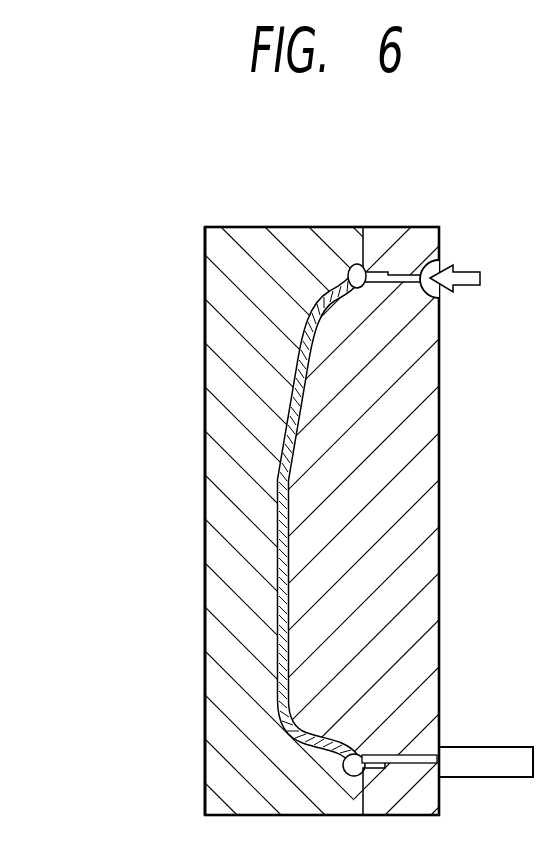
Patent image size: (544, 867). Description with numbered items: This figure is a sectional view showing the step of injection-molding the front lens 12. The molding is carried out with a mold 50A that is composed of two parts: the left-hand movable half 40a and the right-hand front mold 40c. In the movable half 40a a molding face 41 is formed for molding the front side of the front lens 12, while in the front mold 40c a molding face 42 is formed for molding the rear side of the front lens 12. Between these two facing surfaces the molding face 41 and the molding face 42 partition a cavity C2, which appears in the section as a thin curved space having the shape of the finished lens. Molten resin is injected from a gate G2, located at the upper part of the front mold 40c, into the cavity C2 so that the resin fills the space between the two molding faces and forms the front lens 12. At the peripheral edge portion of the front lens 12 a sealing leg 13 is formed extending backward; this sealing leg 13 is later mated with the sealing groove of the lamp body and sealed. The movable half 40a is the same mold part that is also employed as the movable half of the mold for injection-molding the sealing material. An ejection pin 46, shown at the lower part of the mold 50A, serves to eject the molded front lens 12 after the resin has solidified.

The mold 50A is at (322, 460).
The movable half 40a is at (277, 227).
The front mold 40c is at (228, 162).
The sealing leg 13 is at (375, 270).
The gate G2 is at (406, 272).
The front lens 12 is at (297, 373).
The molding face 42 is at (298, 462).
The cavity C2 is at (264, 489).
The molding face 41 is at (278, 621).
The ejection pin 46 is at (401, 768).